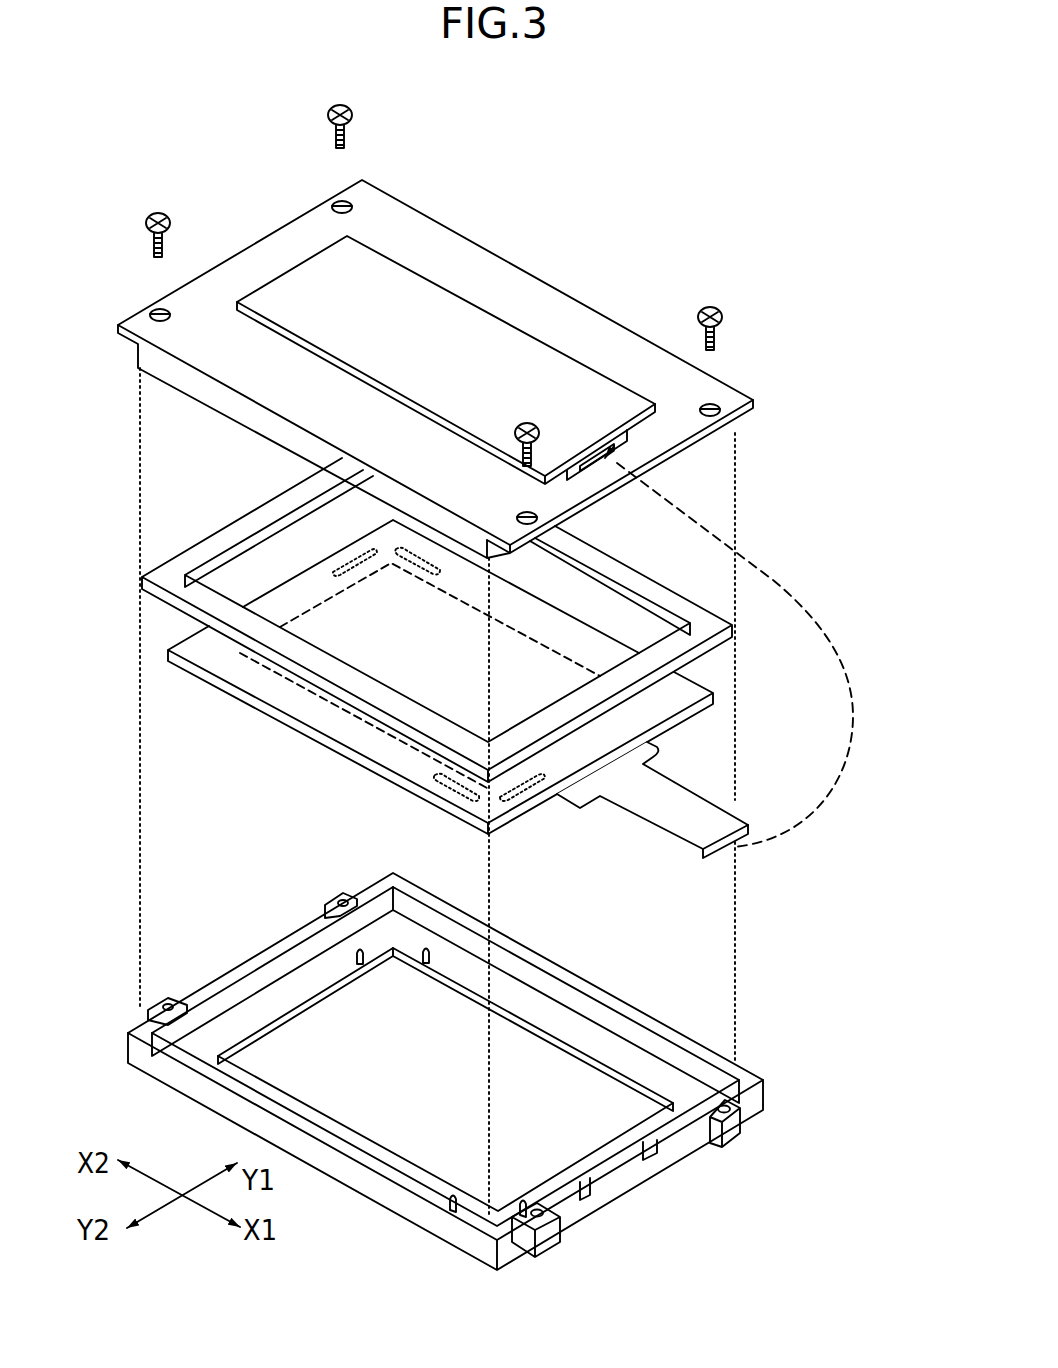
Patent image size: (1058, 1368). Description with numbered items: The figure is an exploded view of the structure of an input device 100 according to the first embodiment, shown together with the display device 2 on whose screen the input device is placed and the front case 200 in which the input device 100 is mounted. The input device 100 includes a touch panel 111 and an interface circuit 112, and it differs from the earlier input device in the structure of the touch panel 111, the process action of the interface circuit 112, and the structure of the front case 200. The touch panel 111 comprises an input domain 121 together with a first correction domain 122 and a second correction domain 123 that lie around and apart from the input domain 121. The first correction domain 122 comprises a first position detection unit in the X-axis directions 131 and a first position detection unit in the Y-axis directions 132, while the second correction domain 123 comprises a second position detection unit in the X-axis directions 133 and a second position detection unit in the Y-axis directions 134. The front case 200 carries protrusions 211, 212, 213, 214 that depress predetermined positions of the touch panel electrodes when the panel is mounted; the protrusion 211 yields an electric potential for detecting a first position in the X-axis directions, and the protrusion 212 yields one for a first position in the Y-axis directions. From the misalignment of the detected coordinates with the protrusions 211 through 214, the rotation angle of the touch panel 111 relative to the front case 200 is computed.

The display device 2 is at (503, 273).
The input device 100 is at (864, 432).
The touch panel 111 is at (707, 678).
The interface circuit 112 is at (600, 410).
The input domain 121 is at (320, 703).
The first correction domain 122 is at (412, 873).
The second correction domain 123 is at (453, 628).
The first position detection unit in the X-axis directions 131 is at (452, 792).
The first position detection unit in the Y-axis directions 132 is at (528, 792).
The second position detection unit in the X-axis directions 133 is at (412, 570).
The second position detection unit in the Y-axis directions 134 is at (360, 573).
The front case 200 is at (766, 1081).
The protrusion 211 is at (453, 1205).
The protrusion 212 is at (503, 1227).
The protrusion 213 is at (432, 955).
The protrusion 214 is at (357, 960).